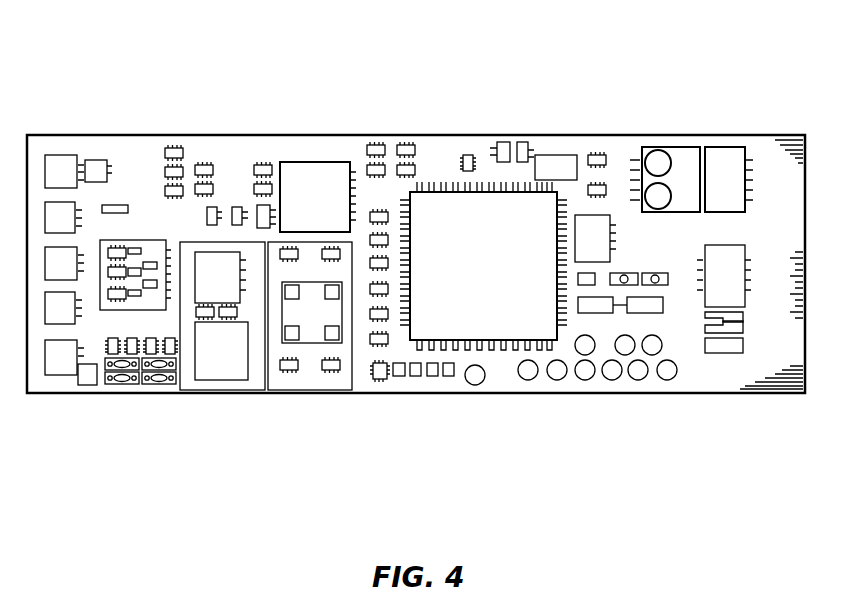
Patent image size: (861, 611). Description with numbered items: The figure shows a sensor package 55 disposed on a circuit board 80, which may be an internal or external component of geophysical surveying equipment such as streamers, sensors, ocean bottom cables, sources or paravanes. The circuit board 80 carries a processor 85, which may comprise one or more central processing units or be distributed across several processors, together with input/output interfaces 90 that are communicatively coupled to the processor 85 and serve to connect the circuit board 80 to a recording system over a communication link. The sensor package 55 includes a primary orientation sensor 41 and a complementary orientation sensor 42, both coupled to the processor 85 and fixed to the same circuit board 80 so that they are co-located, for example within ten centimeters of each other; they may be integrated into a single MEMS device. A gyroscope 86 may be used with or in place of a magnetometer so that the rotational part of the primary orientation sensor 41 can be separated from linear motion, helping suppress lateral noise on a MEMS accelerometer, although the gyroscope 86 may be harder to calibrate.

The circuit board 80 is at (700, 78).
The processor 85 is at (499, 280).
The gyroscope 86 is at (331, 210).
The input/output interface 90 is at (120, 388).
The primary orientation sensor 41 is at (225, 388).
The complementary orientation sensor 42 is at (310, 388).
The sensor package 55 is at (352, 452).